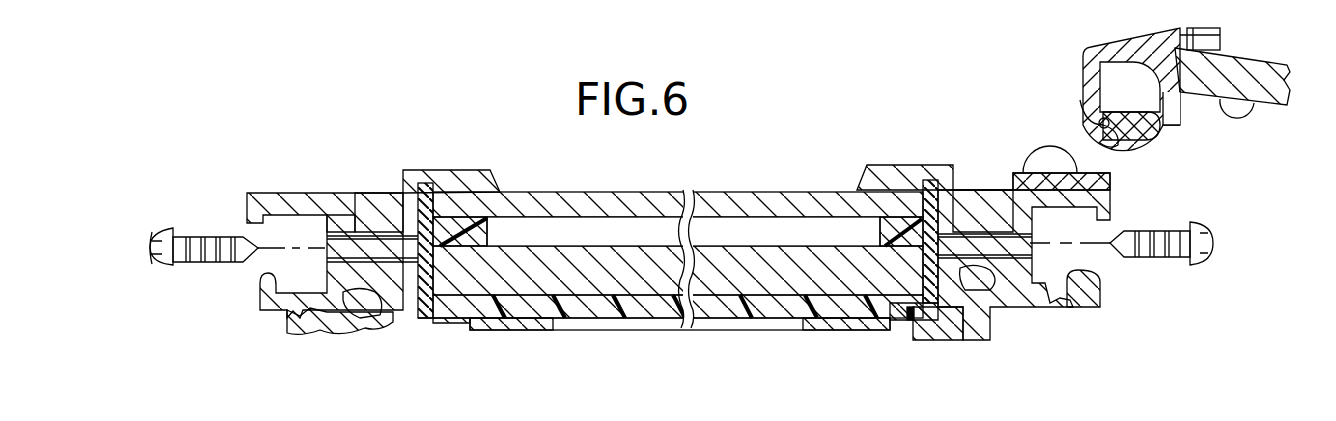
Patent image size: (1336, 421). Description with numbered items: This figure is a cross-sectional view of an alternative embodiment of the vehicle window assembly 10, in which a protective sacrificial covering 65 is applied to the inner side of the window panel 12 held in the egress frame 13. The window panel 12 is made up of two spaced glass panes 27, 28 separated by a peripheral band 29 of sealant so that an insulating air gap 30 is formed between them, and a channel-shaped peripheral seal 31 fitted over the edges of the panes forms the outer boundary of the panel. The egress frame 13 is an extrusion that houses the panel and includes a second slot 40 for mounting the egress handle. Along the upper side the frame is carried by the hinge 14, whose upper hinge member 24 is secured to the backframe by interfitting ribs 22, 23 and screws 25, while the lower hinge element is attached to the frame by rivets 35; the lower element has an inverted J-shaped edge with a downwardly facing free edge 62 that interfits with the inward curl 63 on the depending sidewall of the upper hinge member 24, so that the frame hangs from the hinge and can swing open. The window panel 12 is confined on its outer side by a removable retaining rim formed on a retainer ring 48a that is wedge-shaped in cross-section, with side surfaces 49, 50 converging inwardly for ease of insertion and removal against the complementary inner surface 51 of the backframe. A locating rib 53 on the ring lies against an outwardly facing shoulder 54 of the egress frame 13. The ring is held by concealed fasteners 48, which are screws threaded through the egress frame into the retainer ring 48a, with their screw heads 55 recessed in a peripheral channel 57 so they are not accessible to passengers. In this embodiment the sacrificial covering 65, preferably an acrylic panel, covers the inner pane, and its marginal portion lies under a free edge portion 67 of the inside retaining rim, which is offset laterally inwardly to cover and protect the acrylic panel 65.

The vehicle window assembly 10 is at (750, 154).
The window panel 12 is at (654, 184).
The egress frame 13 is at (1004, 352).
The hinge 14 is at (1127, 93).
The interfitting rib 22 is at (1203, 38).
The interfitting rib 23 is at (1183, 65).
The upper hinge member 24 is at (1117, 35).
The screw 25 is at (1243, 118).
The glass pane 27 is at (790, 275).
The glass pane 28 is at (565, 190).
The peripheral band of sealant 29 is at (872, 226).
The insulating air gap 30 is at (660, 235).
The channel-shaped peripheral seal 31 is at (910, 325).
The rivet 35 is at (1040, 150).
The second slot 40 is at (440, 322).
The concealed fastener 48 is at (205, 263).
The retainer ring 48a is at (950, 322).
The side surface of retainer ring 49 is at (363, 310).
The side surface of retainer ring 50 is at (440, 170).
The inner surface of backframe 51 is at (377, 233).
The locating rib 53 is at (360, 200).
The shoulder 54 is at (347, 227).
The screw head 55 is at (162, 267).
The peripheral channel 57 is at (1080, 300).
The free edge 62 is at (1103, 120).
The inward curl 63 is at (1107, 145).
The protective sacrificial covering 65 is at (625, 322).
The free edge portion 67 is at (535, 322).